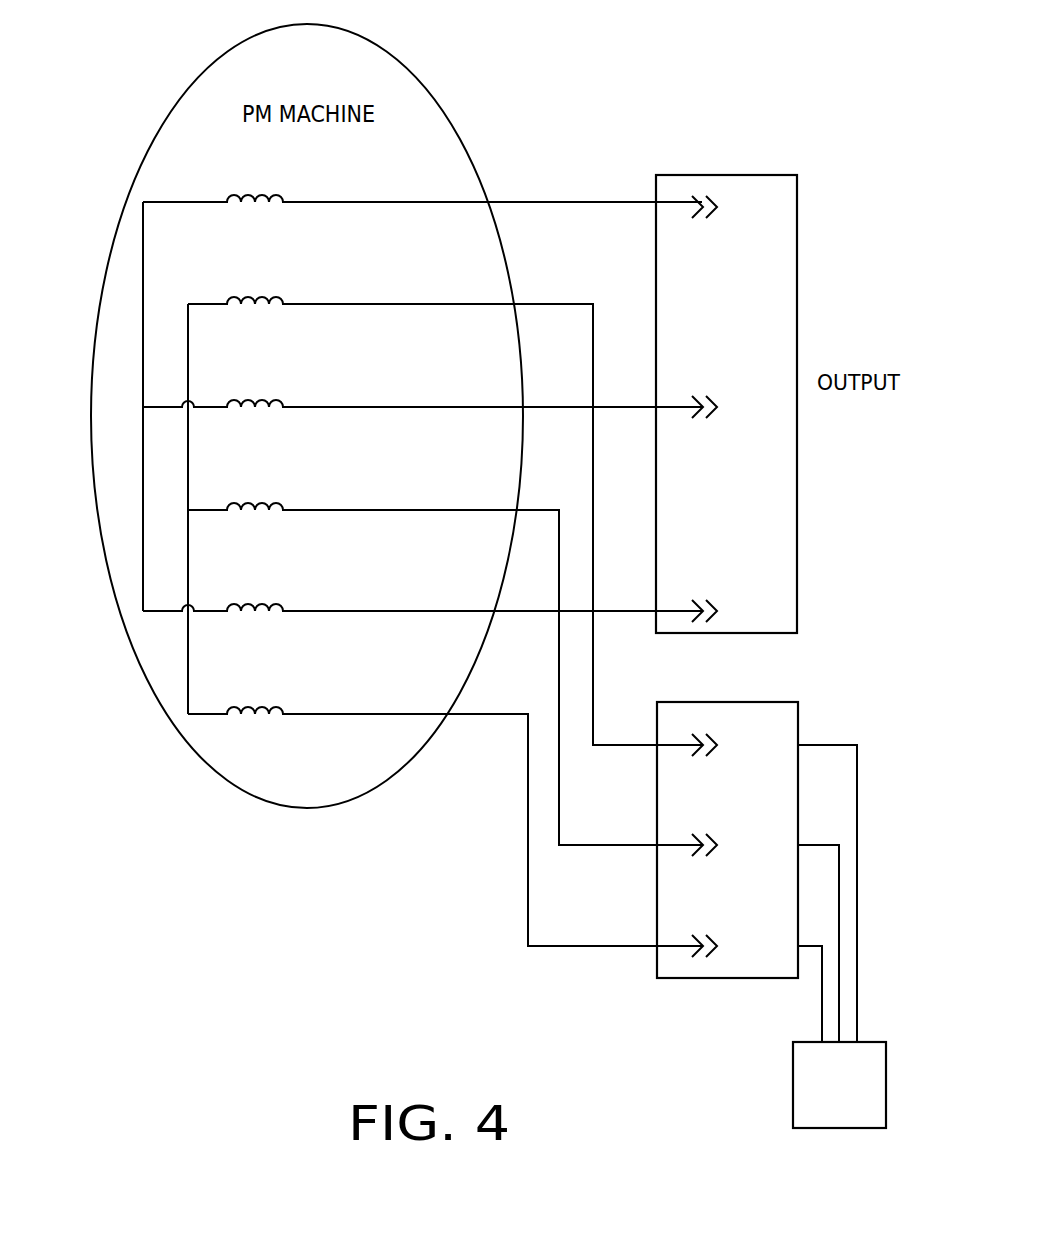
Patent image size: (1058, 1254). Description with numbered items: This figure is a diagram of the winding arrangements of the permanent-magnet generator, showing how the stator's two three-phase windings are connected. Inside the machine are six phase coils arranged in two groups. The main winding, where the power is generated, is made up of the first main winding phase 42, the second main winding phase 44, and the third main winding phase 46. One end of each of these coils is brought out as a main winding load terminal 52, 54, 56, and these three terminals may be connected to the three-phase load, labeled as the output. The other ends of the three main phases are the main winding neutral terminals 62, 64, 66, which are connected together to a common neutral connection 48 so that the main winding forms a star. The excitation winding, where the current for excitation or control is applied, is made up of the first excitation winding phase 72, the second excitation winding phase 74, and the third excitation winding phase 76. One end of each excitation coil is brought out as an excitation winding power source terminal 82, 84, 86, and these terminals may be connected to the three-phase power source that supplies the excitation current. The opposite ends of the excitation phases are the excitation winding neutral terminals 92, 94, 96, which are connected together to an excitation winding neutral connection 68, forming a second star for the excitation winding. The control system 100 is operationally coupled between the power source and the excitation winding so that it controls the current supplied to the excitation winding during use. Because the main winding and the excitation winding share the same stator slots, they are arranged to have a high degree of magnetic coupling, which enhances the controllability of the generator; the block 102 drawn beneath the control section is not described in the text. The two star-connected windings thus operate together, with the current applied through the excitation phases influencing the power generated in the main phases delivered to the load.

The main winding phase L1 42 is at (510, 177).
The main winding phase L3 44 is at (553, 388).
The main winding phase L5 46 is at (540, 591).
The neutral connection 48 is at (143, 240).
The main winding load terminal 52 is at (679, 187).
The main winding load terminal 54 is at (679, 387).
The main winding load terminal 56 is at (672, 594).
The main winding neutral terminal 62 is at (128, 187).
The main winding neutral terminal 64 is at (128, 391).
The main winding neutral terminal 66 is at (128, 596).
The excitation winding neutral connection 68 is at (188, 630).
The excitation winding phase L2 72 is at (543, 282).
The excitation winding phase L4 74 is at (559, 490).
The excitation winding phase L6 76 is at (484, 694).
The excitation winding power source terminal 82 is at (680, 727).
The excitation winding power source terminal 84 is at (675, 827).
The excitation winding power source terminal 86 is at (675, 927).
The excitation winding neutral terminal 92 is at (169, 295).
The excitation winding neutral terminal 94 is at (170, 520).
The excitation winding neutral terminal 96 is at (172, 725).
The control system 100 is at (780, 703).
The controller 102 is at (805, 1083).